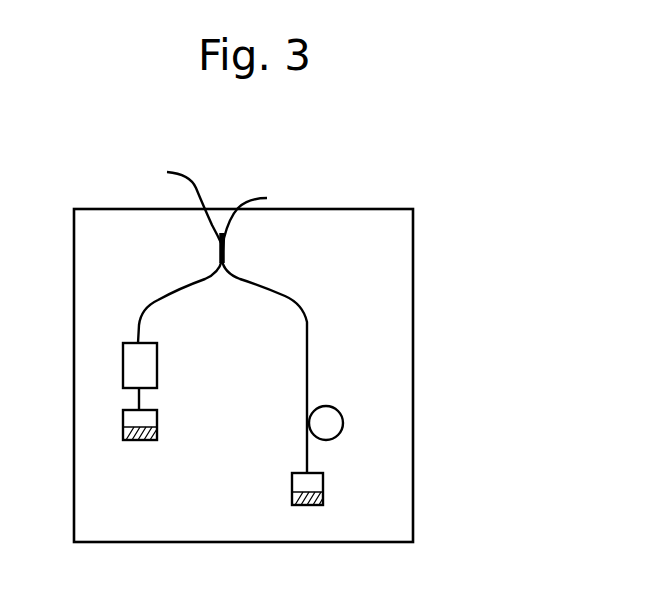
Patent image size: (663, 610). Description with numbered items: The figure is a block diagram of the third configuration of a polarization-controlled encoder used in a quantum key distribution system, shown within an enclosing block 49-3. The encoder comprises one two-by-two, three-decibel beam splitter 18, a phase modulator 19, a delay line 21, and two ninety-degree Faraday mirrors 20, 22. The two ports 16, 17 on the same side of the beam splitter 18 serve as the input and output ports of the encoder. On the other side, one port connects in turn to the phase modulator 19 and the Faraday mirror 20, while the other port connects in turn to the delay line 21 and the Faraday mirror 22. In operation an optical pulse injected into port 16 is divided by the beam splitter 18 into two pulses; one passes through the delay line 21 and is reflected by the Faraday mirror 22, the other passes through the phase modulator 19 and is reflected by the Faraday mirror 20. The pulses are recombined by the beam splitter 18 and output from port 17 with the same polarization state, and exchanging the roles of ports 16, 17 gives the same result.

The port 16 is at (212, 311).
The port 17 is at (228, 245).
The 2×2-3 dB beam splitter 18 is at (195, 247).
The phase modulator 19 is at (168, 372).
The 90 degree Faraday mirror 20 is at (168, 427).
The delay line 21 is at (352, 424).
The 90 degree Faraday mirror 22 is at (338, 491).
The optical module housing 49-3 is at (300, 375).